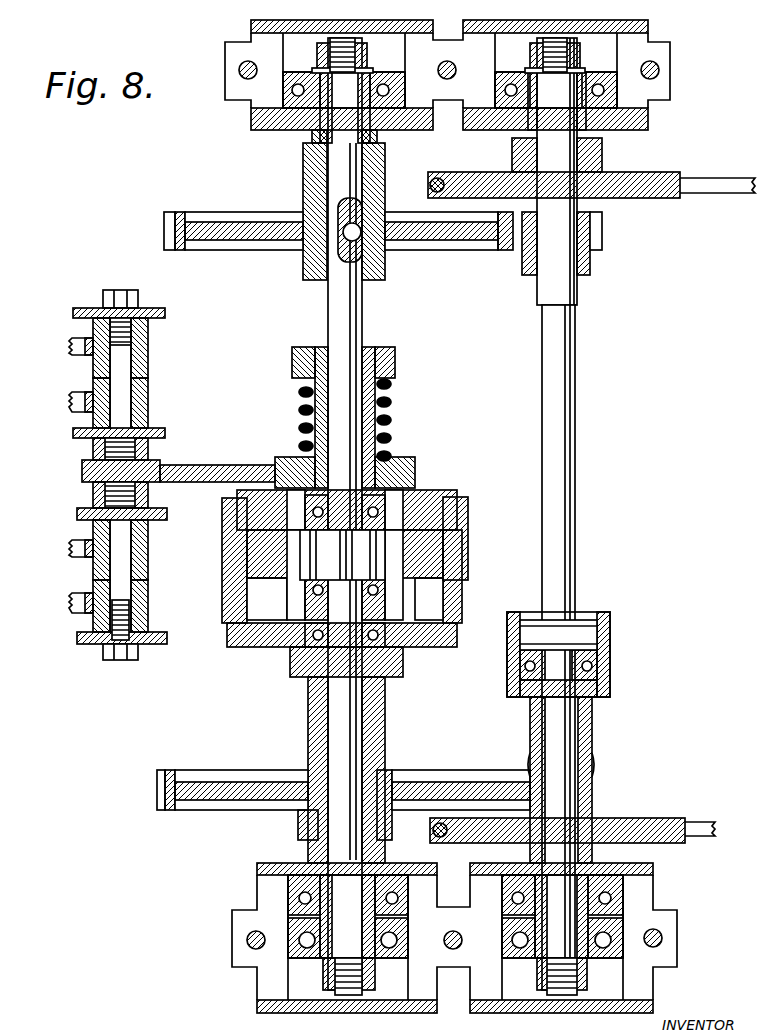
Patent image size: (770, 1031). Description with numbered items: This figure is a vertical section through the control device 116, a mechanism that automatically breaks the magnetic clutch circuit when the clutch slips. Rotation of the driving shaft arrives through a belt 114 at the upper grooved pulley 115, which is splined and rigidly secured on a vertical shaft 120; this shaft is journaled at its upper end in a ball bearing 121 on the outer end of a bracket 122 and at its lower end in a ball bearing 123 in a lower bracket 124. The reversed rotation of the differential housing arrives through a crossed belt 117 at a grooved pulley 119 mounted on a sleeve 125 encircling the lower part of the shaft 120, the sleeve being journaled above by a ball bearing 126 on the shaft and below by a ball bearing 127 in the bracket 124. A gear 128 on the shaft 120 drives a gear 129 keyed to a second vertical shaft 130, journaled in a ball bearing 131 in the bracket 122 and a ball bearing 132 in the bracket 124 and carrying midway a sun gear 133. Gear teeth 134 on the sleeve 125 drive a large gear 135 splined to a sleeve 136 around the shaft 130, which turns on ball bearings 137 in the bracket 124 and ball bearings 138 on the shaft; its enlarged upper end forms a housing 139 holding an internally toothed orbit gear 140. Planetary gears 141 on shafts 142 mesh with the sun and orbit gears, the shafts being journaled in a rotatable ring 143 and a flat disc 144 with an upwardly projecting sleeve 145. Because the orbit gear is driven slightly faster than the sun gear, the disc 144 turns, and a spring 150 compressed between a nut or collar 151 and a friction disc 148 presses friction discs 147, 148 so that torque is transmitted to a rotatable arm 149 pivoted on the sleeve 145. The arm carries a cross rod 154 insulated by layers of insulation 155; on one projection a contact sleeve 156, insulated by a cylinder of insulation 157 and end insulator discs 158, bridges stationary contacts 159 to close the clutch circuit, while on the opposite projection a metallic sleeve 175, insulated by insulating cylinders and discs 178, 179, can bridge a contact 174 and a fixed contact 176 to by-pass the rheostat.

The belt 114 is at (748, 185).
The upper grooved pulley 115 is at (637, 180).
The control device 116 is at (578, 505).
The crossed belt 117 is at (710, 820).
The grooved pulley 119 is at (643, 820).
The vertical shaft 120 is at (578, 300).
The ball bearing 121 is at (612, 89).
The bracket 122 is at (643, 46).
The ball bearing 123 is at (626, 950).
The lower bracket 124 is at (644, 881).
The sleeve 125 is at (593, 727).
The ball bearing 126 is at (612, 667).
The ball bearing 127 is at (613, 905).
The gear 128 is at (602, 238).
The gear 129 is at (210, 212).
The vertical shaft 130 is at (350, 305).
The ball bearing 131 is at (282, 100).
The ball bearing 132 is at (287, 956).
The sun gear 133 is at (423, 542).
The gear teeth 134 is at (592, 772).
The large gear 135 is at (205, 770).
The sleeve 136 is at (381, 712).
The ball bearings 137 is at (283, 900).
The ball bearings 138 is at (313, 648).
The housing 139 is at (458, 627).
The orbit gear 140 is at (465, 578).
The planetary gears 141 is at (418, 558).
The shafts 142 is at (397, 503).
The rotatable ring 143 is at (277, 625).
The flat disc 144 is at (236, 522).
The sleeve 145 is at (396, 358).
The friction disc 147 is at (414, 484).
The friction disc 148 is at (400, 457).
The rotatable arm 149 is at (230, 470).
The spring 150 is at (303, 398).
The nut or collar 151 is at (303, 347).
The cross rod 154 is at (92, 498).
The layers of insulation 155 is at (82, 463).
The contact sleeve 156 is at (149, 560).
The cylinder of insulation 157 is at (149, 600).
The end insulator discs 158 is at (163, 514).
The stationary contacts 159 is at (78, 600).
The contact 174 is at (68, 402).
The metallic sleeve 175 is at (149, 345).
The fixed contact 176 is at (68, 345).
The insulating cylinders 178 is at (149, 395).
The insulating discs 179 is at (158, 312).